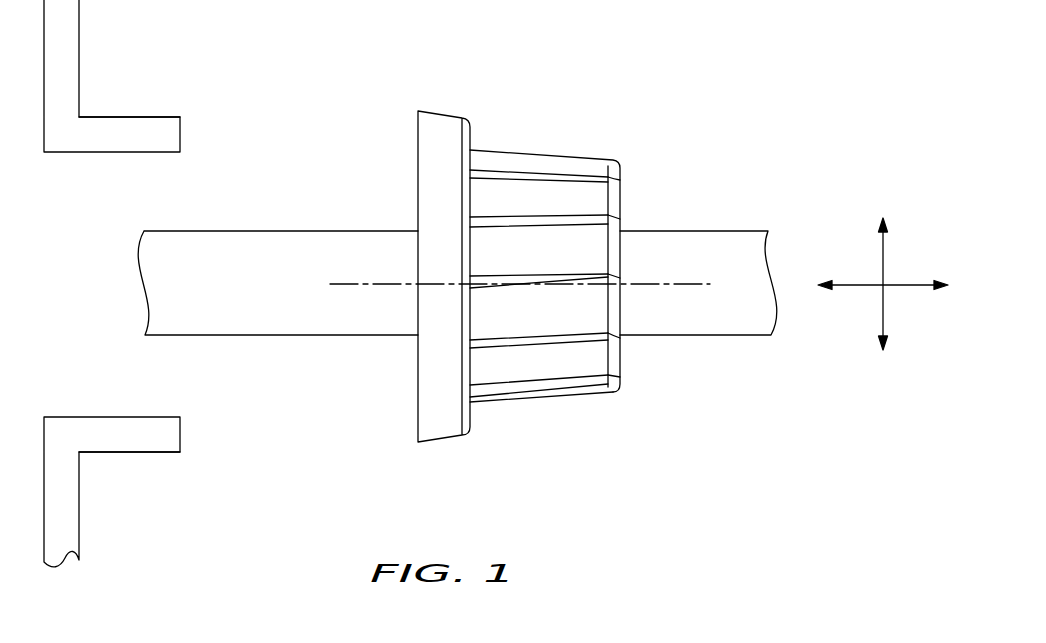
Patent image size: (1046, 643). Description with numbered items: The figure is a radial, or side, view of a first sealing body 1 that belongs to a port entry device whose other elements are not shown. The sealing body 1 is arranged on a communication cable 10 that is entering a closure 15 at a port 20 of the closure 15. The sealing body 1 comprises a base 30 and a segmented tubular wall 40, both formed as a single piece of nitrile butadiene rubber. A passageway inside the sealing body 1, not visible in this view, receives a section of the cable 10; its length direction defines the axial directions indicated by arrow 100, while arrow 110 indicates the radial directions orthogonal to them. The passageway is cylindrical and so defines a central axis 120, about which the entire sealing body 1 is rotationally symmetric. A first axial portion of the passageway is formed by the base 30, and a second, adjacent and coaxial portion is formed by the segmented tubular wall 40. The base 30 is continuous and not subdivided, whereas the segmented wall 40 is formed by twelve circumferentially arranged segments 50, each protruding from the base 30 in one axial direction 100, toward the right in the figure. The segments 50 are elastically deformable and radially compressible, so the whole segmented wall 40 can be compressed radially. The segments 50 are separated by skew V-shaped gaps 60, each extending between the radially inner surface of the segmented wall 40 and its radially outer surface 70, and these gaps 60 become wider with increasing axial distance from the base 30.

The first sealing body 1 is at (562, 248).
The communication cable 10 is at (750, 238).
The closure 15 is at (68, 16).
The port 20 is at (178, 193).
The base 30 is at (438, 133).
The segmented tubular wall 40 is at (538, 128).
The segments 50 is at (582, 245).
The skew V-shaped gaps 60 is at (607, 277).
The outer surface 70 is at (513, 402).
The axial directions arrow 100 is at (908, 288).
The radial directions arrow 110 is at (885, 256).
The central axis 120 is at (668, 287).